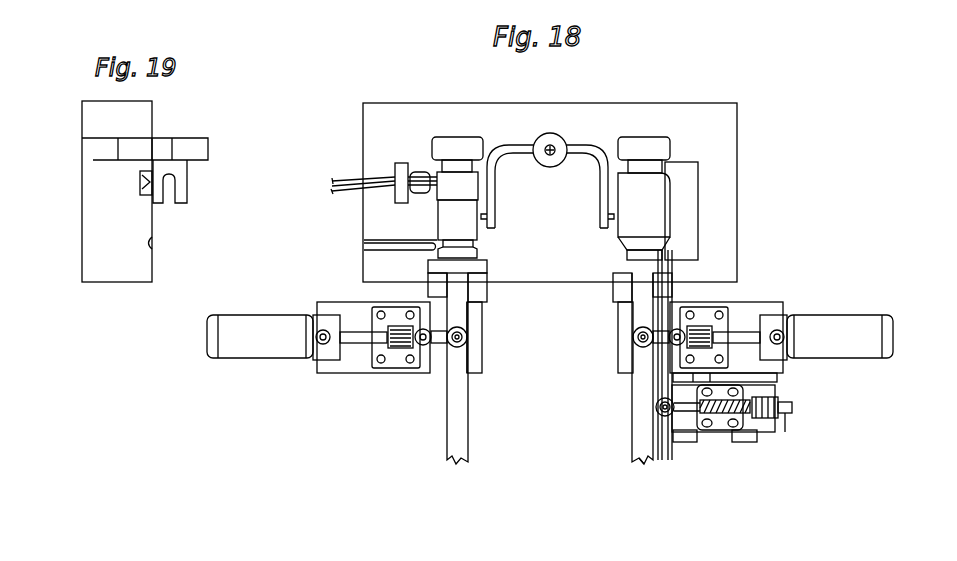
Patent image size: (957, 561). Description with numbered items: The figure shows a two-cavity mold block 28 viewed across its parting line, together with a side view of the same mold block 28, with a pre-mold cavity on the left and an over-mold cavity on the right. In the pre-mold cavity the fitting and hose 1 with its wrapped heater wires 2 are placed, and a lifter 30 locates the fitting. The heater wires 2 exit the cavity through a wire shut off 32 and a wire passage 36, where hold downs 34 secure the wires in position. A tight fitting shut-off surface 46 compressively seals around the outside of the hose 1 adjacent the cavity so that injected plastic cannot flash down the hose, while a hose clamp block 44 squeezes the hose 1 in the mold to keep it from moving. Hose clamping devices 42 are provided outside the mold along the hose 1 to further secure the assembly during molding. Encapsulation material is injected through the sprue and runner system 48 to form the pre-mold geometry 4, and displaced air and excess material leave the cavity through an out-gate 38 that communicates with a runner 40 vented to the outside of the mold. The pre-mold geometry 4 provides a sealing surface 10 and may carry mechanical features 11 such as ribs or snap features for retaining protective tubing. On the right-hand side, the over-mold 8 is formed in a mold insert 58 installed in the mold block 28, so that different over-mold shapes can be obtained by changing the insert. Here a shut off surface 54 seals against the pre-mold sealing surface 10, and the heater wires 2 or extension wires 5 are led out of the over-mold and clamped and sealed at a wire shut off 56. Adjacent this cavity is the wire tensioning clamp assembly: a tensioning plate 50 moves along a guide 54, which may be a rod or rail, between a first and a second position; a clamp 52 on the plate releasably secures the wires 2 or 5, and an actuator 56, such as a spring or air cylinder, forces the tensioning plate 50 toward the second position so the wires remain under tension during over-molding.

In FIG. 18, the hose 1 is at (462, 405).
In FIG. 18, the heater wires 2 is at (332, 181).
In FIG. 18, the pre-mold geometry 4 is at (458, 172).
In FIG. 18, the extension wire 5 is at (650, 447).
In FIG. 18, the over-mold 8 is at (675, 193).
In FIG. 18, the sealing surface 10 is at (470, 260).
In FIG. 18, the mechanical features 11 is at (437, 255).
In FIG. 19, the mold block 28 is at (90, 173).
In FIG. 18, the mold block 28 is at (634, 118).
In FIG. 19, the lifter 30 is at (163, 137).
In FIG. 18, the lifter 30 is at (443, 137).
In FIG. 19, the wire shut off 32 is at (150, 178).
In FIG. 18, the wire shut off 32 is at (437, 180).
In FIG. 19, the hold downs 34 is at (163, 205).
In FIG. 18, the hold downs 34 is at (398, 168).
In FIG. 19, the wire passage 36 is at (150, 183).
In FIG. 18, the wire passage 36 is at (364, 170).
In FIG. 18, the out-gate 38 is at (440, 243).
In FIG. 19, the runner 40 is at (152, 250).
In FIG. 18, the runner 40 is at (378, 245).
In FIG. 18, the hose clamping devices 42 is at (775, 310).
In FIG. 18, the hose clamp block 44 is at (485, 292).
In FIG. 18, the shut-off surface 46 is at (483, 265).
In FIG. 18, the sprue and runner system 48 is at (538, 136).
In FIG. 18, the tensioning plate 50 is at (765, 423).
In FIG. 18, the clamp 52 is at (727, 432).
In FIG. 18, the shut off surface / guide 54 is at (660, 247).
In FIG. 18, the wire shut off / actuator 56 is at (673, 253).
In FIG. 18, the mold insert 58 is at (663, 250).